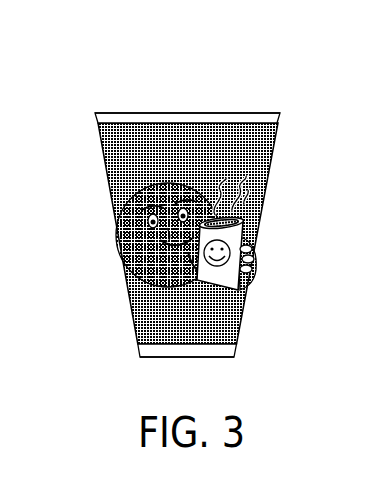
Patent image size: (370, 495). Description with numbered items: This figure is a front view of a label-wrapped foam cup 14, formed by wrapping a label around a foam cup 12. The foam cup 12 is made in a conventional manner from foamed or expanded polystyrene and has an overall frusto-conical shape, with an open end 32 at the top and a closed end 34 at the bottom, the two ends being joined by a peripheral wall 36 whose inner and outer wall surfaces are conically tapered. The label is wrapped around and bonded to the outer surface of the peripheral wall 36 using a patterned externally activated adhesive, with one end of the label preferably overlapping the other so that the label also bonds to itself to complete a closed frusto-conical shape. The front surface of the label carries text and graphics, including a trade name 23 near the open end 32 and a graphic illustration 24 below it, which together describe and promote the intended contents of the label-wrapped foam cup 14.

The label-wrapped foam cup 14 is at (128, 82).
The foam cup 12 is at (88, 113).
The open end 32 is at (243, 113).
The trade name 23 is at (280, 148).
The graphic illustration 24 is at (138, 254).
The peripheral wall 36 is at (234, 350).
The closed end 34 is at (170, 358).